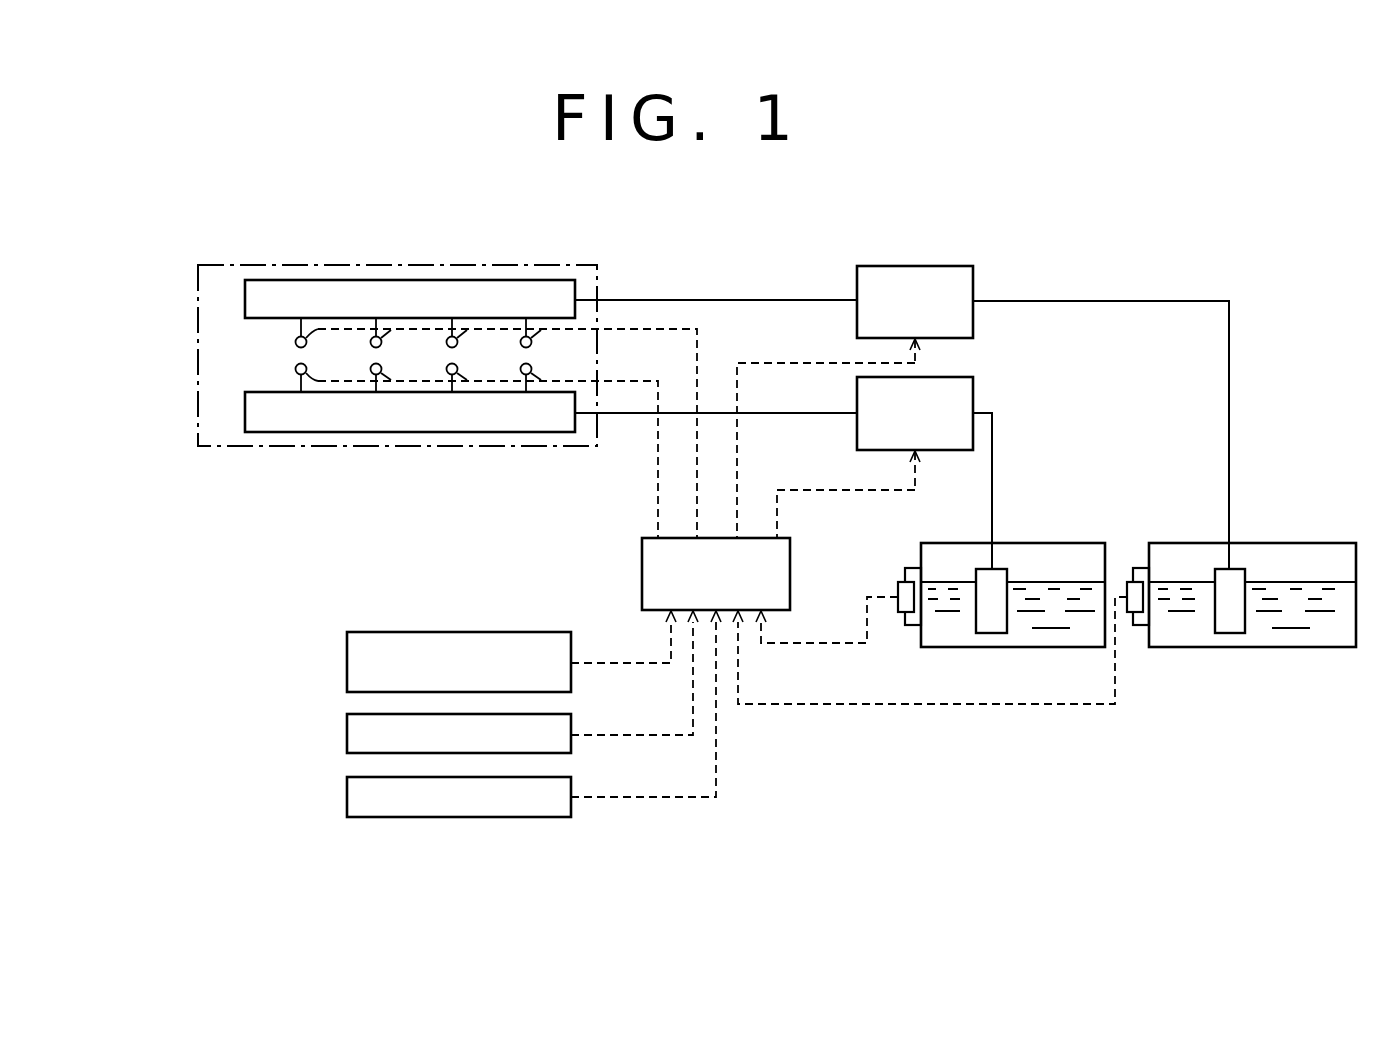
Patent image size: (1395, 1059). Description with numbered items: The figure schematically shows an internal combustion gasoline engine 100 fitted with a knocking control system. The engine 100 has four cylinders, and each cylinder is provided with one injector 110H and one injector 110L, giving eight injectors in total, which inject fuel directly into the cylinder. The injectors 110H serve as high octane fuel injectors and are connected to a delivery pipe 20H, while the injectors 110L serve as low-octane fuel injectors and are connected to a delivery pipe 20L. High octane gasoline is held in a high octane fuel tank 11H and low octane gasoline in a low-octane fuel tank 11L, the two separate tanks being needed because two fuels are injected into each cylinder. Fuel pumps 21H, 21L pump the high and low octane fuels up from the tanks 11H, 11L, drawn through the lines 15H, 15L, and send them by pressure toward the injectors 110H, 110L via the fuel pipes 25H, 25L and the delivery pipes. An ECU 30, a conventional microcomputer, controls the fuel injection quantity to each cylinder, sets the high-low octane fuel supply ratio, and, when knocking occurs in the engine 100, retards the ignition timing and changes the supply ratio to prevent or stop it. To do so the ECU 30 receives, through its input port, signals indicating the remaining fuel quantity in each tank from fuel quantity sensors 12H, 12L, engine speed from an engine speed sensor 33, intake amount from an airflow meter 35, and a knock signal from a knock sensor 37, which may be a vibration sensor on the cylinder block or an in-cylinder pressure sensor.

The internal combustion engine 100 is at (567, 265).
The delivery pipe 20H is at (302, 290).
The delivery pipe 20L is at (285, 415).
The injectors 110H is at (297, 341).
The injectors 110L is at (296, 369).
The fuel pipe 25H is at (762, 300).
The fuel pipe 25L is at (798, 413).
The fuel pump 21H is at (855, 402).
The fuel pump 21L is at (875, 457).
The high-octane fuel pipe 15H is at (1049, 301).
The low-octane fuel pipe 15L is at (993, 435).
The high octane fuel tank 11H is at (1310, 543).
The low-octane fuel tank 11L is at (1068, 543).
The fuel quantity sensor 12H is at (1128, 616).
The fuel quantity sensor 12L is at (898, 588).
The ECU 30 is at (642, 572).
The engine speed sensor 33 is at (347, 662).
The airflow meter 35 is at (347, 735).
The knock sensor 37 is at (347, 797).